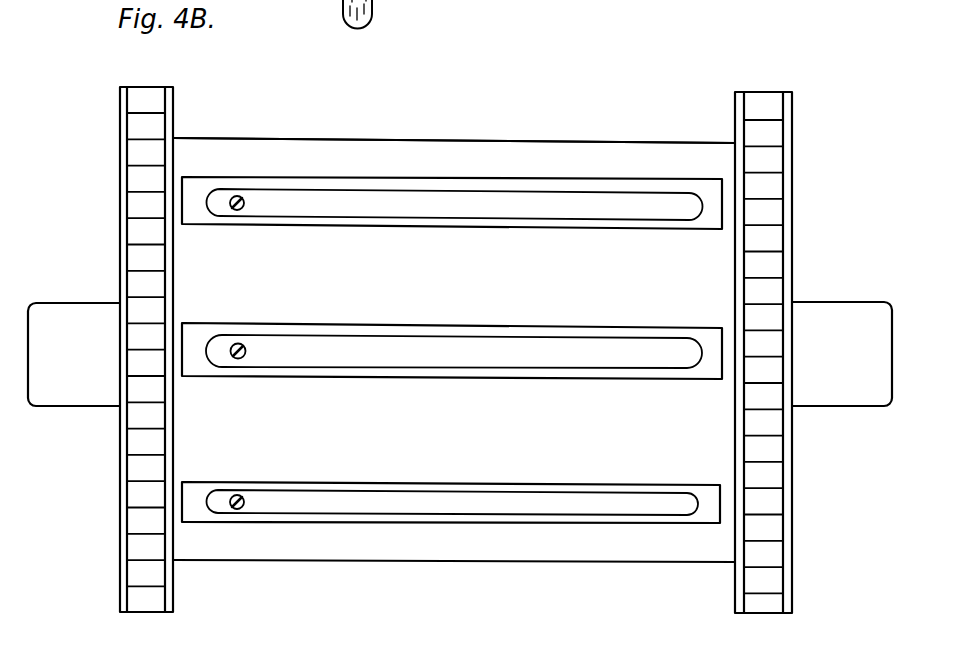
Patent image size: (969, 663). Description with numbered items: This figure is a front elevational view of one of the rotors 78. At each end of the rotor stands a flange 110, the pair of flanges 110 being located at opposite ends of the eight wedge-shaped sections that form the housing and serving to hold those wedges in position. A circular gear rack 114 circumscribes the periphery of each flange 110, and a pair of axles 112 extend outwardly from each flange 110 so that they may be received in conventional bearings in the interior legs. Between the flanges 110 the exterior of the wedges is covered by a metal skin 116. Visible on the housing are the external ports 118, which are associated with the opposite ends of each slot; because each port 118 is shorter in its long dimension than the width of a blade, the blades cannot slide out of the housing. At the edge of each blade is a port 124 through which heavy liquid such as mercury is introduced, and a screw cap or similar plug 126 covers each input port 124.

The rotor 78 is at (568, 77).
The flange 110 is at (170, 108).
The axle 112 is at (53, 338).
The circular gear rack 114 is at (148, 86).
The metal skin 116 is at (438, 160).
The external port 118 is at (196, 190).
The port 124 is at (244, 197).
The plug 126 is at (243, 357).